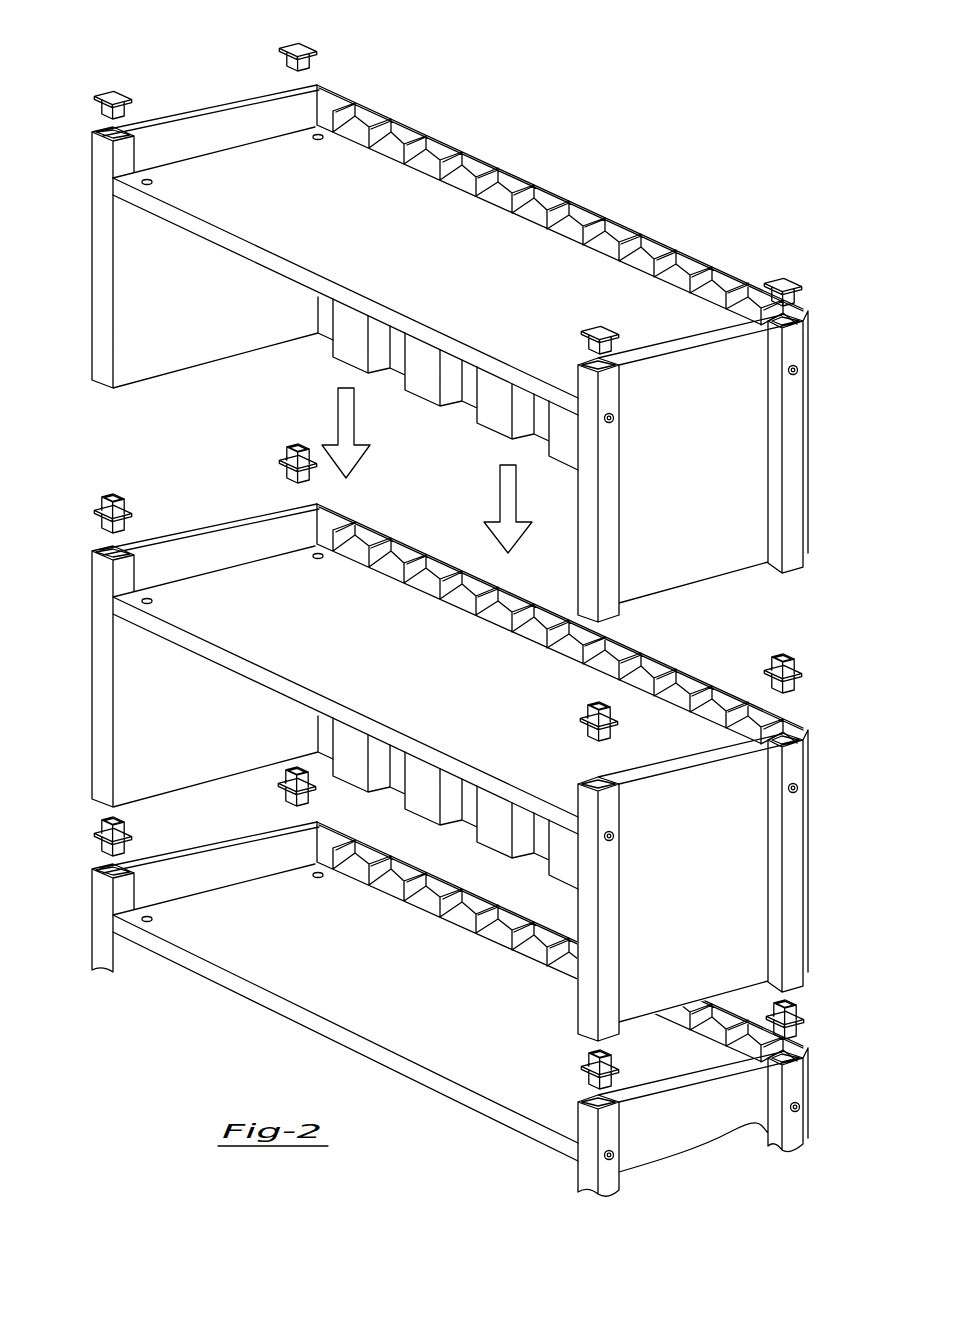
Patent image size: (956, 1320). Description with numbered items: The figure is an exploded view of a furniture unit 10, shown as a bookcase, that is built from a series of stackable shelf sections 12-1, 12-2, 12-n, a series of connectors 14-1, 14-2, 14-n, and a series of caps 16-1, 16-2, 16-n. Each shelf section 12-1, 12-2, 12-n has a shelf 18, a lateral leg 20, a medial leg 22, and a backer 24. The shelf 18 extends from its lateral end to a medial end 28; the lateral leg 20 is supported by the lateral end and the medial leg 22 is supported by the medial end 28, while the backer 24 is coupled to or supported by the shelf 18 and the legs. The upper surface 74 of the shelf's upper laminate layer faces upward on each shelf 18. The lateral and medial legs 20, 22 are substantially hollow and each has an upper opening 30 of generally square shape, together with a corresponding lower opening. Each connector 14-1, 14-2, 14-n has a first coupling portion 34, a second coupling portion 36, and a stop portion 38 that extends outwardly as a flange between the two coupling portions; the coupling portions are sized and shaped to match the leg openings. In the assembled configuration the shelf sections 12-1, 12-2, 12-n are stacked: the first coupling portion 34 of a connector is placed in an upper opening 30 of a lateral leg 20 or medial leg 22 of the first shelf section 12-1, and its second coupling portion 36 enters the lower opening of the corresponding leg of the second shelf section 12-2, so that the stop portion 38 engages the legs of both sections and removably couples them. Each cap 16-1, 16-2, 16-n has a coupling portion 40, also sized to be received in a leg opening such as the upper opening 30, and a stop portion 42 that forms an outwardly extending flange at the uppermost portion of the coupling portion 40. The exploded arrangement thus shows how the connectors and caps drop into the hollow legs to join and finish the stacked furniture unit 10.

The furniture unit 10 is at (672, 152).
The first shelf section 12-1 is at (813, 1112).
The second shelf section 12-2 is at (813, 857).
The nth shelf section 12-n is at (813, 466).
The first connector 14-1 is at (105, 822).
The second connector 14-2 is at (578, 1068).
The nth connector 14-n is at (800, 1020).
The first cap 16-1 is at (116, 92).
The second cap 16-2 is at (597, 330).
The nth cap 16-n is at (782, 283).
The shelf 18 is at (203, 240).
The lateral leg 20 is at (577, 547).
The medial leg 22 is at (100, 318).
The backer 24 is at (488, 160).
The medial end 28 is at (215, 148).
The upper opening 30 is at (116, 552).
The first coupling portion 34 is at (100, 852).
The second coupling portion 36 is at (125, 838).
The stop portion 38 is at (128, 833).
The coupling portion 40 is at (103, 108).
The stop portion 42 is at (134, 97).
The upper surface 74 is at (420, 247).